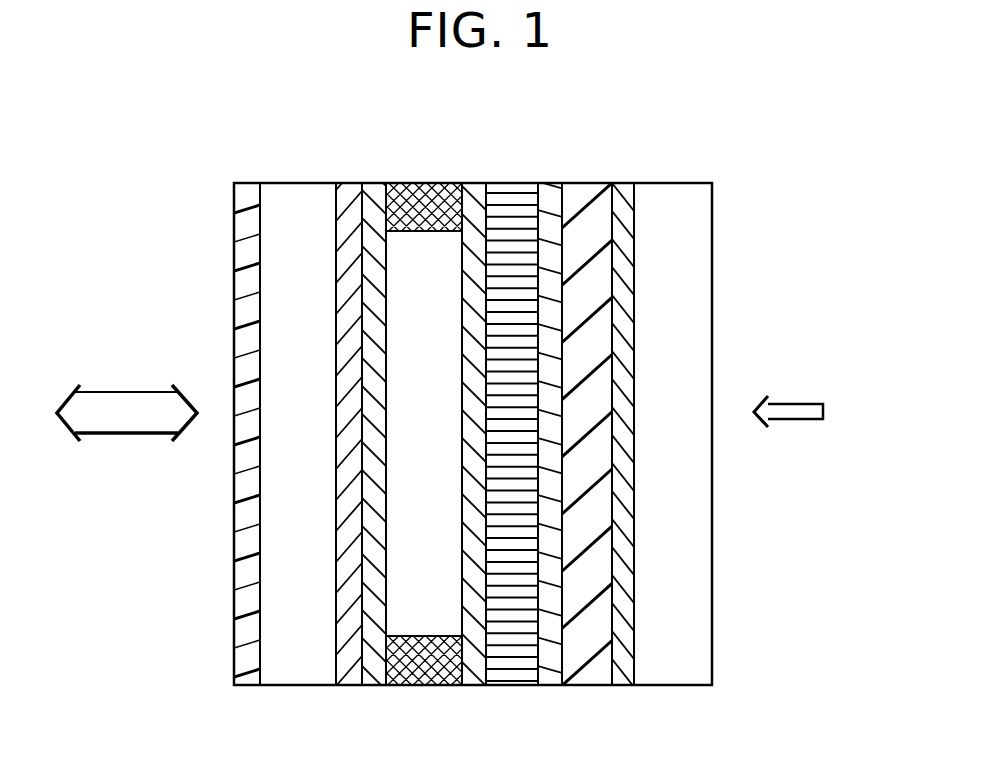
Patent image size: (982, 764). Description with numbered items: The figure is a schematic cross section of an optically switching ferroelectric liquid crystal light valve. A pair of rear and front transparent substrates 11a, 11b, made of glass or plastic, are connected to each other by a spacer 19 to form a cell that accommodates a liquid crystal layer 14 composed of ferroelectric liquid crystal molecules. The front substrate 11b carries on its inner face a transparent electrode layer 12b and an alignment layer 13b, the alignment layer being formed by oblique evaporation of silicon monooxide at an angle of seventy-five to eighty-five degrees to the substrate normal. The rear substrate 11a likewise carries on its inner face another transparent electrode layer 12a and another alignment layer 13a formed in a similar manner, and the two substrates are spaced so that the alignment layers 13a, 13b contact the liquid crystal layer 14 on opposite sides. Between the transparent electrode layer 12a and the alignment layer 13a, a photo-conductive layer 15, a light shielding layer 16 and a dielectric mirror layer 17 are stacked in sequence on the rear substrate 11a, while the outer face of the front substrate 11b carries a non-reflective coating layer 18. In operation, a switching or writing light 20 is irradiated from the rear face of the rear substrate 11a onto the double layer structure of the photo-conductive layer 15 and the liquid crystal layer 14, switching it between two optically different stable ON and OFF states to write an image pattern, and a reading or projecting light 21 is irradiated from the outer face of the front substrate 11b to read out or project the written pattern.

The rear transparent substrate 11a is at (663, 200).
The front transparent substrate 11b is at (277, 195).
The transparent electrode layer 12a is at (618, 200).
The transparent electrode layer 12b is at (351, 197).
The alignment layer 13a is at (469, 670).
The alignment layer 13b is at (373, 672).
The liquid crystal layer 14 is at (397, 598).
The photo-conductive layer 15 is at (593, 672).
The light shielding layer 16 is at (546, 665).
The dielectric mirror layer 17 is at (510, 195).
The non-reflective coating layer 18 is at (236, 662).
The spacer 19 is at (397, 184).
The switching or writing light 20 is at (788, 422).
The reading or projecting light 21 is at (102, 437).